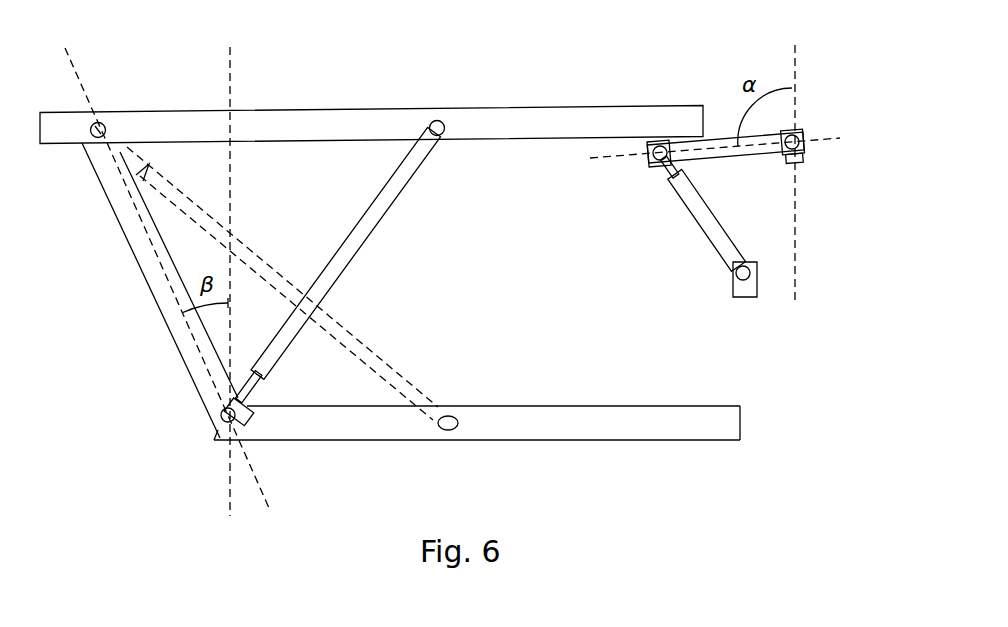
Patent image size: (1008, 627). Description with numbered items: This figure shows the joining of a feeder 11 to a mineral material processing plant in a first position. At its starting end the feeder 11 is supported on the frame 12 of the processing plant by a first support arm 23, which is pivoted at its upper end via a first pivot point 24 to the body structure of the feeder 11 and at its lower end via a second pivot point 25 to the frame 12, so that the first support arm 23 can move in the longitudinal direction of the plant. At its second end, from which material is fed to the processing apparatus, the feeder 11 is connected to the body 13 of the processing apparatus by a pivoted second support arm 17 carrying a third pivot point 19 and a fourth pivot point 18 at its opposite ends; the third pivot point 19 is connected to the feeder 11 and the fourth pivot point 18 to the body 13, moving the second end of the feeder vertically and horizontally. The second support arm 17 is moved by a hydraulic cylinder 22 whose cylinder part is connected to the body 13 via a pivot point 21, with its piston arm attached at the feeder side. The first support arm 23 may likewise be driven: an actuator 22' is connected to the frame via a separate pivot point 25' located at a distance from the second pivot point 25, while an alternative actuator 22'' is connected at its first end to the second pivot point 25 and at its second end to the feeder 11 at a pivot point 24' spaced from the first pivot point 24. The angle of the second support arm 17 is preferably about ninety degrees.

The feeder 11 is at (333, 115).
The frame of the processing plant 12 is at (213, 441).
The body of the processing apparatus 13 is at (808, 163).
The second support arm 17 is at (722, 156).
The fourth pivot point 18 is at (805, 136).
The third pivot point 19 is at (662, 148).
The pivot point 21 is at (738, 276).
The hydraulic cylinder 22 is at (673, 213).
The actuator 22' is at (307, 283).
The actuator 22'' is at (351, 264).
The first support arm 23 is at (160, 293).
The first pivot point 24 is at (68, 162).
The pivot point 24' is at (474, 106).
The second pivot point 25 is at (266, 397).
The separate pivot point 25' is at (472, 466).